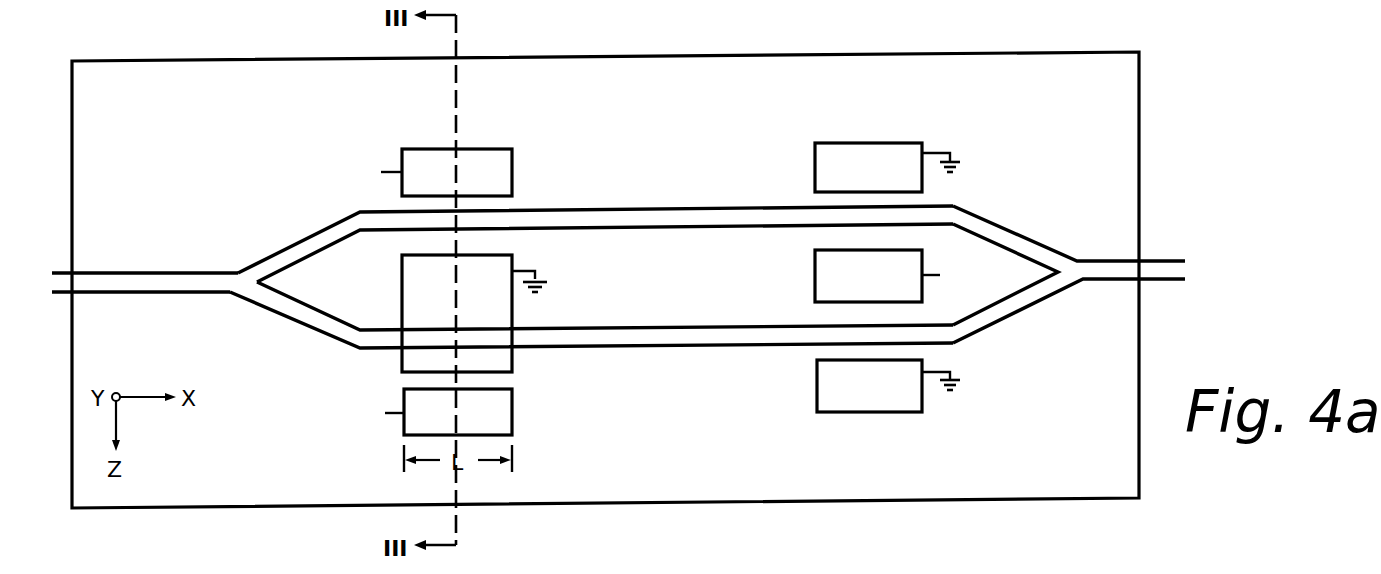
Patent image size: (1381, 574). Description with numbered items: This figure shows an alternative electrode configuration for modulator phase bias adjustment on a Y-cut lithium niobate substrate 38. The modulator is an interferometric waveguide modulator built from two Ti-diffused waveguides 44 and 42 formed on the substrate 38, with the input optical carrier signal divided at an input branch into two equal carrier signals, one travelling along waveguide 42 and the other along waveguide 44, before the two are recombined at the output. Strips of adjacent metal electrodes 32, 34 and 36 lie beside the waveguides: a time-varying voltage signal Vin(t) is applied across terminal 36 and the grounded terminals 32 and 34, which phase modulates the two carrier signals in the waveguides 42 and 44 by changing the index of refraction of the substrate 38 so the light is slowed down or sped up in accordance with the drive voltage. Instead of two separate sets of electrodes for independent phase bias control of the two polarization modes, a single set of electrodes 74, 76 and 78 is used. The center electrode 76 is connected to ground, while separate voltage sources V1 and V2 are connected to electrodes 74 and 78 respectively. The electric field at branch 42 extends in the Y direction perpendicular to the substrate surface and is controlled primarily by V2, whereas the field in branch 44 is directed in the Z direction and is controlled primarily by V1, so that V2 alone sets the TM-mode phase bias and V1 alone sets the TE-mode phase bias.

The grounded electrode 32 is at (815, 160).
The grounded electrode 34 is at (817, 375).
The signal electrode terminal 36 is at (815, 275).
The lithium niobate substrate 38 is at (1140, 128).
The waveguide 42 is at (305, 325).
The waveguide 44 is at (287, 248).
The bias electrode 74 is at (415, 148).
The center electrode 76 is at (402, 311).
The bias electrode 78 is at (512, 408).